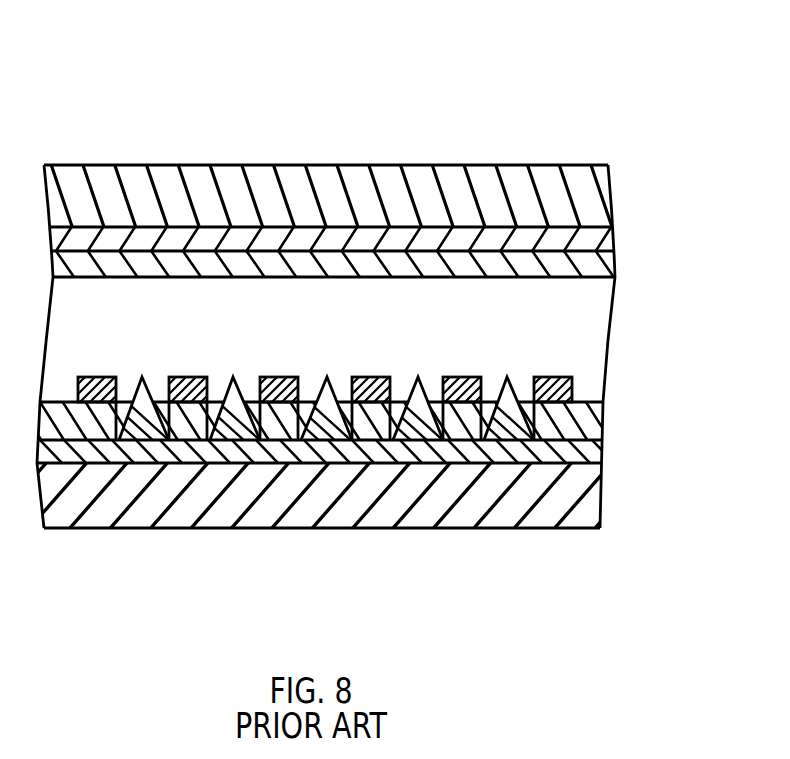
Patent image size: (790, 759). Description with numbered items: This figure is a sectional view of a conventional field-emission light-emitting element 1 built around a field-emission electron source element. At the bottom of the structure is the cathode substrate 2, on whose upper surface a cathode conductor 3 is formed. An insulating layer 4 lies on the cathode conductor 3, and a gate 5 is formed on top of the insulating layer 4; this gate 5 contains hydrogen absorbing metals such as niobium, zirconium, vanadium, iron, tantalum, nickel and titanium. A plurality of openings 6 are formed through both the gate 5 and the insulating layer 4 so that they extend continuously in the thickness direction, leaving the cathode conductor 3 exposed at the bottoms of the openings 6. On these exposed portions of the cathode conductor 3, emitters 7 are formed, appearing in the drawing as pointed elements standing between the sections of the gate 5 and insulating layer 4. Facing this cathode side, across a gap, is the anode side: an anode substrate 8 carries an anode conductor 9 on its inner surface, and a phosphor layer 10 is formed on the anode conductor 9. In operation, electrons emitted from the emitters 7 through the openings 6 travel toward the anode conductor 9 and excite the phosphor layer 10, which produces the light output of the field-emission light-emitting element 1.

The field-emission light-emitting element 1 is at (387, 126).
The cathode substrate 2 is at (592, 503).
The cathode conductor 3 is at (593, 450).
The insulating layer 4 is at (595, 417).
The gate 5 is at (553, 375).
The openings 6 is at (489, 397).
The emitters 7 is at (509, 429).
The anode substrate 8 is at (603, 200).
The anode conductor 9 is at (603, 242).
The phosphor layer 10 is at (603, 265).